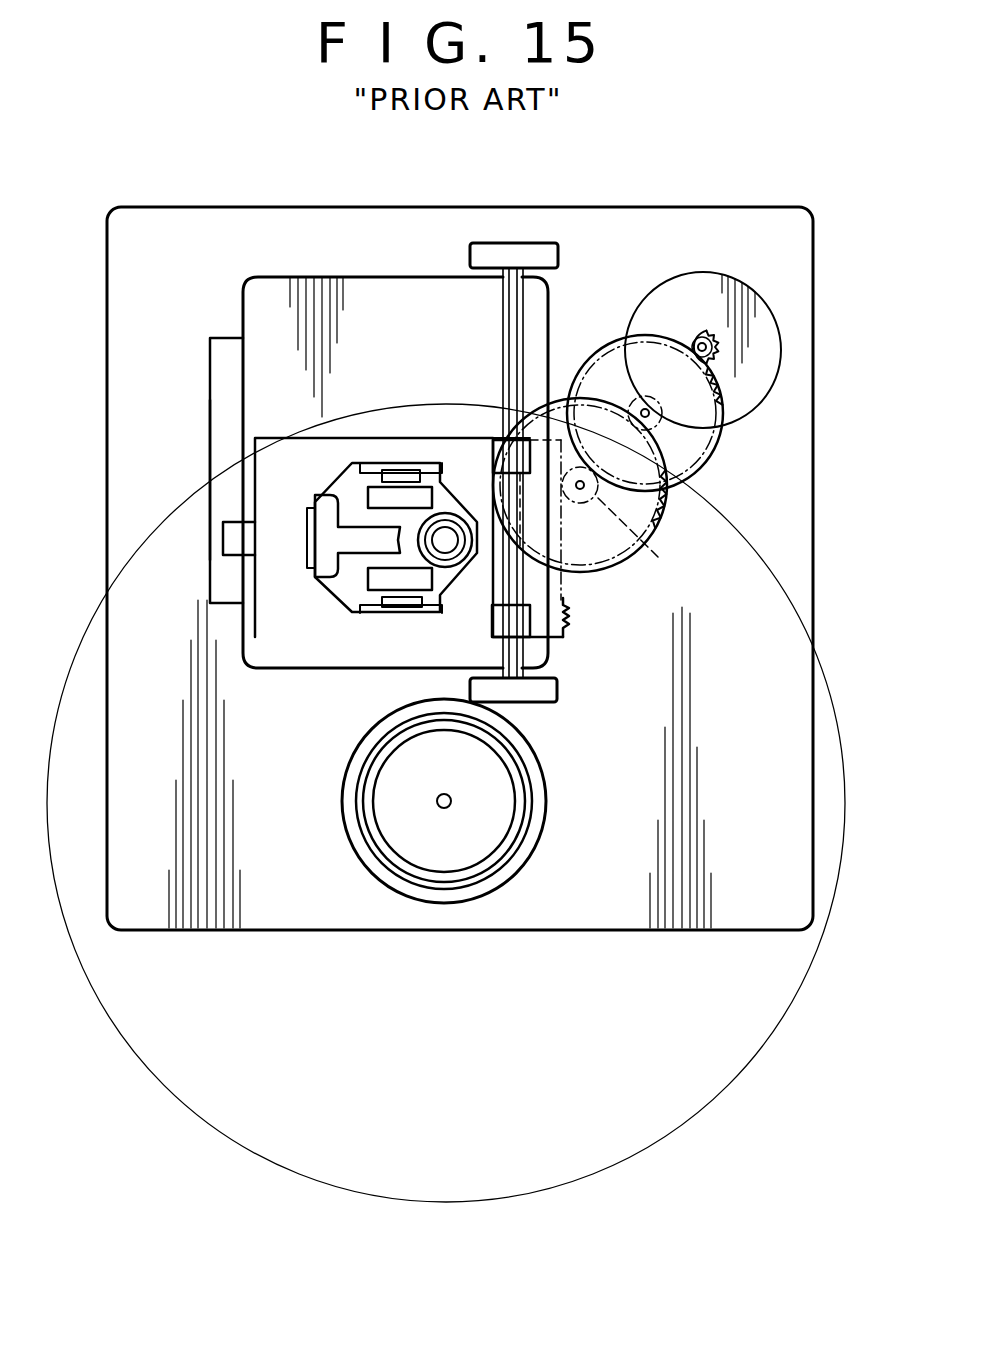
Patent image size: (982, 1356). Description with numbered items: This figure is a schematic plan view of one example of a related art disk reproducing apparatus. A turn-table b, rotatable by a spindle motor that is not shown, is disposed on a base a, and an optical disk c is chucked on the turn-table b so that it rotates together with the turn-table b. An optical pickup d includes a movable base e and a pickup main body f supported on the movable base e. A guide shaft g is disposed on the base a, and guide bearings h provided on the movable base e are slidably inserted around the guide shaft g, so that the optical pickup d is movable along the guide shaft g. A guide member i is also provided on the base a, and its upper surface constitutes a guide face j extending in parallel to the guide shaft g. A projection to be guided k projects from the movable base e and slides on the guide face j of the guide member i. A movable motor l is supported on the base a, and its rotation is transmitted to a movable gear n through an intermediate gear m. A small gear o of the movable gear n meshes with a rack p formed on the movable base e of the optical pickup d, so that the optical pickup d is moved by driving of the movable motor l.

The base a is at (797, 532).
The turn-table b is at (540, 823).
The optical disk c is at (128, 1047).
The optical pickup d is at (347, 447).
The movable base e is at (282, 623).
The pickup main body f is at (352, 600).
The guide shaft g is at (503, 318).
The guide bearings h is at (490, 448).
The guide member i is at (210, 452).
The guide face j is at (210, 396).
The projection to be guided k is at (232, 540).
The movable motor l is at (783, 345).
The intermediate gear m is at (713, 462).
The movable gear n is at (608, 572).
The small gear o is at (638, 541).
The rack p is at (572, 620).